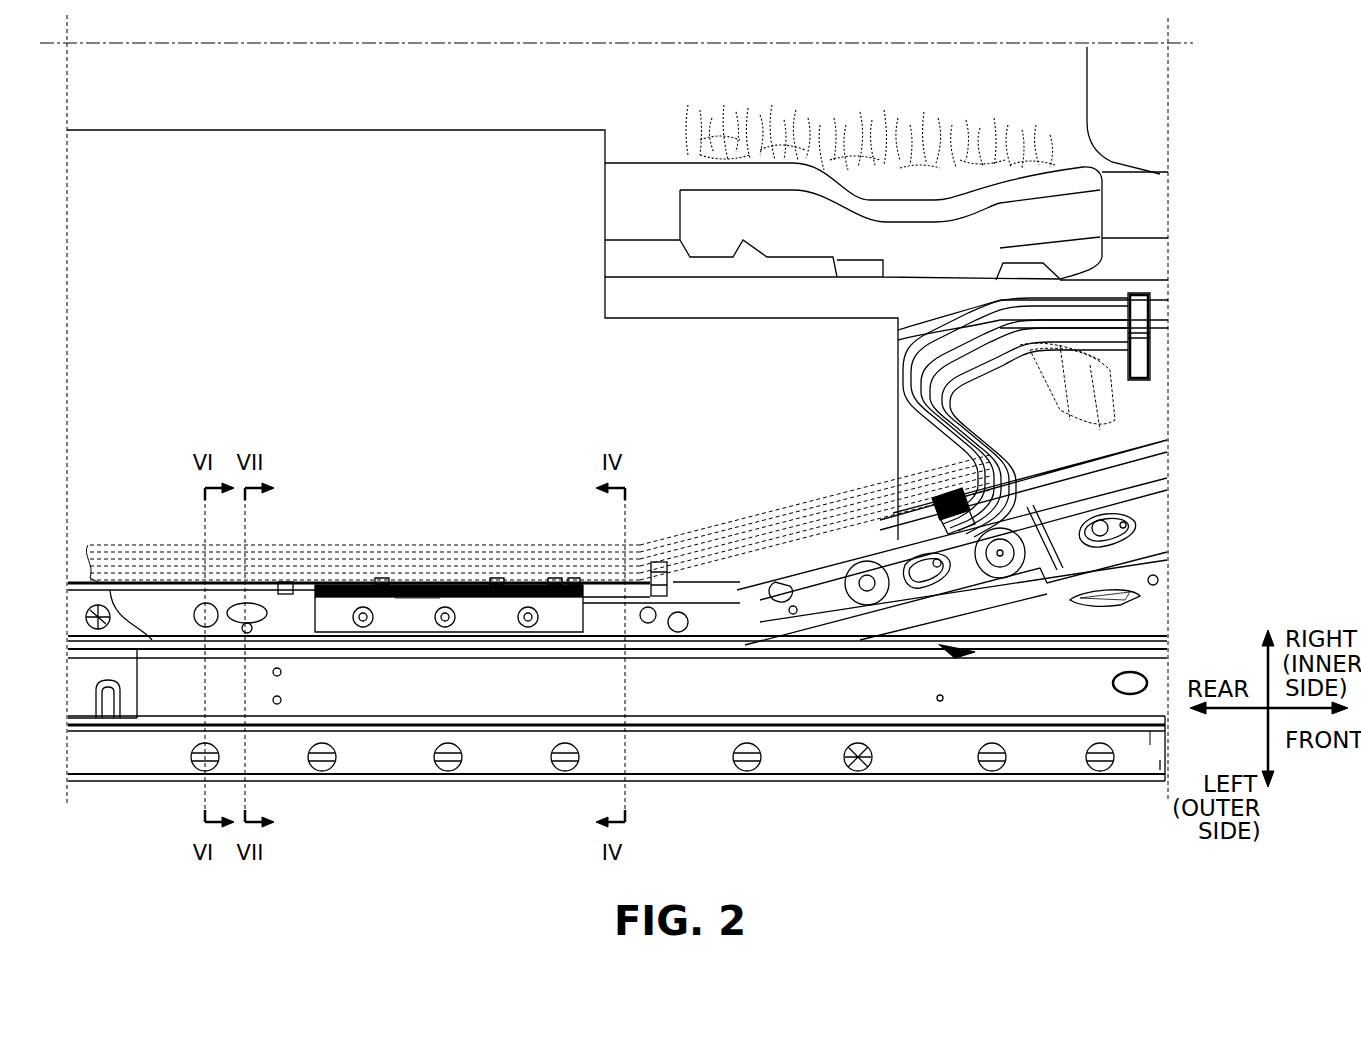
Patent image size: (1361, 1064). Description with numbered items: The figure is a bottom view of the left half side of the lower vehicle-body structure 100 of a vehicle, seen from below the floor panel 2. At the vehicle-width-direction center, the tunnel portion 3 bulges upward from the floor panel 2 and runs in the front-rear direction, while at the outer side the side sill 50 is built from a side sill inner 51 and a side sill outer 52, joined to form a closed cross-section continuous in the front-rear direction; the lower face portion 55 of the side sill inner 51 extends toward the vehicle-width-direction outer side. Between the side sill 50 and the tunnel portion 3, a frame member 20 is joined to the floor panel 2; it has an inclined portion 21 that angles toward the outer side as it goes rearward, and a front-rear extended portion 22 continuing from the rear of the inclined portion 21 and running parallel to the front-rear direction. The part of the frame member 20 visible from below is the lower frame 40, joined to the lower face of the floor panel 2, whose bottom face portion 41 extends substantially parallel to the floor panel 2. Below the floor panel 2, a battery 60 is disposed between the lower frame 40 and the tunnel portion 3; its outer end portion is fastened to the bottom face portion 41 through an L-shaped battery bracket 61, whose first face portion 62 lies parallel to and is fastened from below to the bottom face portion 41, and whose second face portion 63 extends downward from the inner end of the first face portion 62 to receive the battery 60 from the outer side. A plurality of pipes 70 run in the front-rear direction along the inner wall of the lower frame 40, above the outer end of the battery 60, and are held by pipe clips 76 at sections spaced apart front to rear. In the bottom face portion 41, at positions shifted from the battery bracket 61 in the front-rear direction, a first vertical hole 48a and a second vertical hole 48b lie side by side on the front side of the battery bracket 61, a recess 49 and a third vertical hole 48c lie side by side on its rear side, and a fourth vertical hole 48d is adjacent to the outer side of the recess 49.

The floor panel 2 is at (1147, 388).
The tunnel portion 3 is at (1075, 82).
The lower vehicle-body structure 100 is at (1185, 197).
The frame member 20 is at (596, 662).
The lower frame 40 is at (830, 798).
The inclined portion 21 is at (835, 585).
The front-rear extended portion 22 is at (186, 565).
The bottom face portion 41 is at (598, 606).
The first vertical hole 48a is at (683, 610).
The second vertical hole 48b is at (650, 605).
The third vertical hole 48c is at (205, 628).
The fourth vertical hole 48d is at (277, 704).
The recess 49 is at (262, 624).
The side sill 50 is at (745, 812).
The side sill inner 51 is at (680, 690).
The side sill outer 52 is at (663, 758).
The lower face portion 55 is at (408, 700).
The battery 60 is at (325, 358).
The battery bracket 61 is at (348, 472).
The first face portion 62 is at (447, 604).
The second face portion 63 is at (415, 568).
The pipes 70 is at (770, 528).
The pipe clips 76 is at (292, 562).